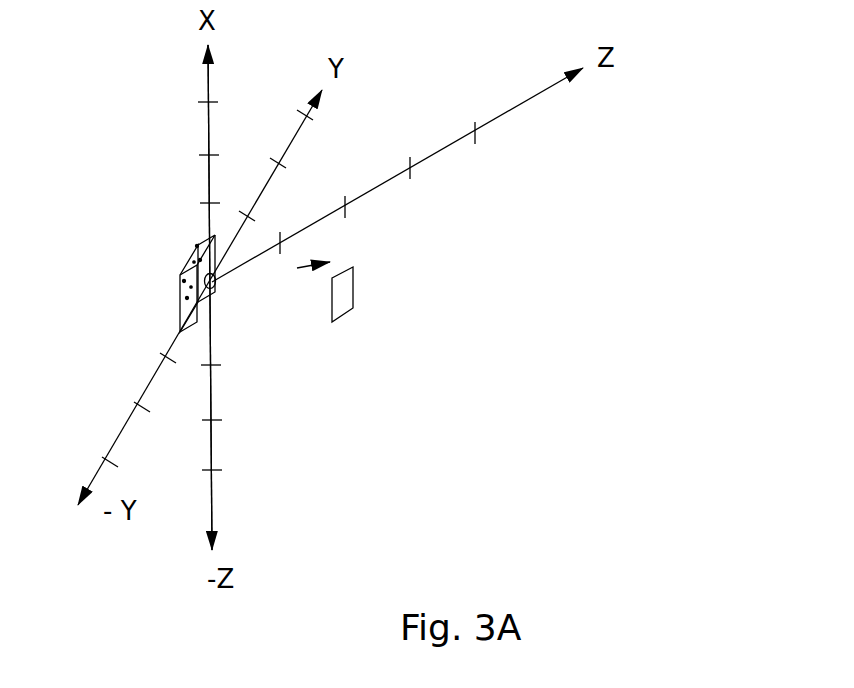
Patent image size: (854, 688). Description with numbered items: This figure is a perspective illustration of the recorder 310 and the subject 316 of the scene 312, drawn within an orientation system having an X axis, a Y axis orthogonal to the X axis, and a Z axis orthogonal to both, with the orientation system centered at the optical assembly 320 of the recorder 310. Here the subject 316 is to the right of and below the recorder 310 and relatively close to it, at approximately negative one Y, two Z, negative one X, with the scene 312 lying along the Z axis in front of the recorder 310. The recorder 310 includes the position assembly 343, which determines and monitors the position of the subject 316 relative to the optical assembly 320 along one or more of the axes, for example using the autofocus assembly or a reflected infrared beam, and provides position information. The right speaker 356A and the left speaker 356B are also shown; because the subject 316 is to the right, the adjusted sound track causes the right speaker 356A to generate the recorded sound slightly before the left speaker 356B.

The recorder 310 is at (188, 258).
The scene 312 is at (288, 277).
The subject 316 is at (347, 307).
The optical assembly 320 is at (216, 282).
The position assembly 343 is at (266, 185).
The right speaker 356A is at (117, 282).
The left speaker 356B is at (166, 222).